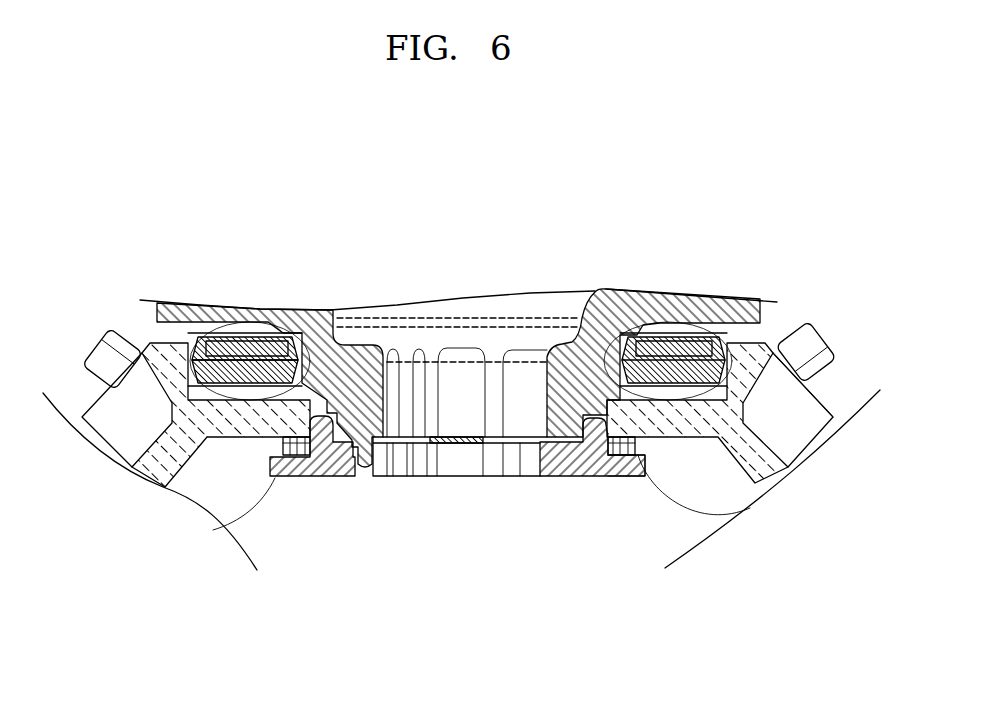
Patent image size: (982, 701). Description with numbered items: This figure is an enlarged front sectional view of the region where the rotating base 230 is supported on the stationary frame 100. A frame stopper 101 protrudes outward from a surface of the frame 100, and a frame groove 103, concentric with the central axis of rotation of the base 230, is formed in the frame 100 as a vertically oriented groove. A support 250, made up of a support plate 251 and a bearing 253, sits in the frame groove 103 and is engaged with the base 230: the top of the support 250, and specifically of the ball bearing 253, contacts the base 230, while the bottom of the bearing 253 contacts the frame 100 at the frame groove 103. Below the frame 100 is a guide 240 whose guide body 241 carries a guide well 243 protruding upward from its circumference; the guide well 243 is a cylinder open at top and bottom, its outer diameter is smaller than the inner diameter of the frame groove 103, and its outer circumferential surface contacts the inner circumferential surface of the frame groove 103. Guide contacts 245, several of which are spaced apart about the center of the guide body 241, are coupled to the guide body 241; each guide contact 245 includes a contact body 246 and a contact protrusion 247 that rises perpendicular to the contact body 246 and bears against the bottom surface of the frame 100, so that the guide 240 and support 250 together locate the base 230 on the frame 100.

The frame 100 is at (251, 436).
The frame stopper 101 is at (98, 360).
The frame groove 103 is at (712, 398).
The base 230 is at (197, 292).
The support 250 is at (460, 296).
The support plate 251 is at (218, 358).
The bearing 253 is at (255, 332).
The guide 240 is at (498, 521).
The guide body 241 is at (560, 477).
The guide well 243 is at (597, 477).
The guide contact 245 is at (505, 546).
The contact body 246 is at (635, 448).
The contact protrusion 247 is at (644, 473).